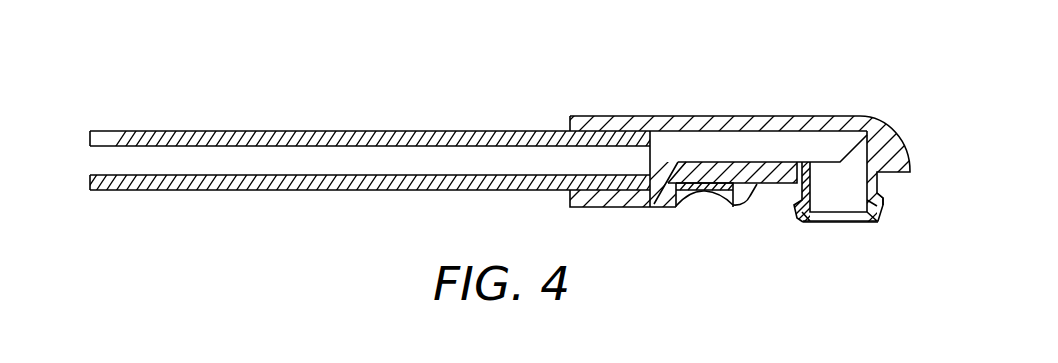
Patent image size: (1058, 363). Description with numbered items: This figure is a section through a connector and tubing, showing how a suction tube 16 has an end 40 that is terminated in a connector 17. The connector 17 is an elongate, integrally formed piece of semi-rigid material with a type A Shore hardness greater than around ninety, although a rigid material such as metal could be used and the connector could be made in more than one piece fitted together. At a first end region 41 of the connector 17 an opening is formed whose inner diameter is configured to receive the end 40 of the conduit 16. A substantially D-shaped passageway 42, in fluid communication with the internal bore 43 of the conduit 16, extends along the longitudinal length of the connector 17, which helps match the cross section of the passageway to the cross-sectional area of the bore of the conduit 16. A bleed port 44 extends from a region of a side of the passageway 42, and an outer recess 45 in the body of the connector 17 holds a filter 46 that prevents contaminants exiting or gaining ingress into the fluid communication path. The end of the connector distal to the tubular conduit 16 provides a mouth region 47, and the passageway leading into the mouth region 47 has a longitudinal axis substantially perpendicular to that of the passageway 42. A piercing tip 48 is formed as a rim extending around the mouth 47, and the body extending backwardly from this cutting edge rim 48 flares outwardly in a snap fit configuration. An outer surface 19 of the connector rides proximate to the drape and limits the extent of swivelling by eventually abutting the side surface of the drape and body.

The suction tube 16 is at (141, 131).
The internal bore 43 is at (343, 160).
The first end region 41 is at (536, 91).
The end 40 is at (628, 131).
The bleed port 44 is at (703, 180).
The connector 17 is at (748, 106).
The D-shaped passageway 42 is at (797, 147).
The outer recess 45 is at (702, 220).
The filter 46 is at (702, 192).
The outer surface 19 is at (764, 180).
The piercing tip 48 is at (812, 223).
The mouth region 47 is at (884, 244).